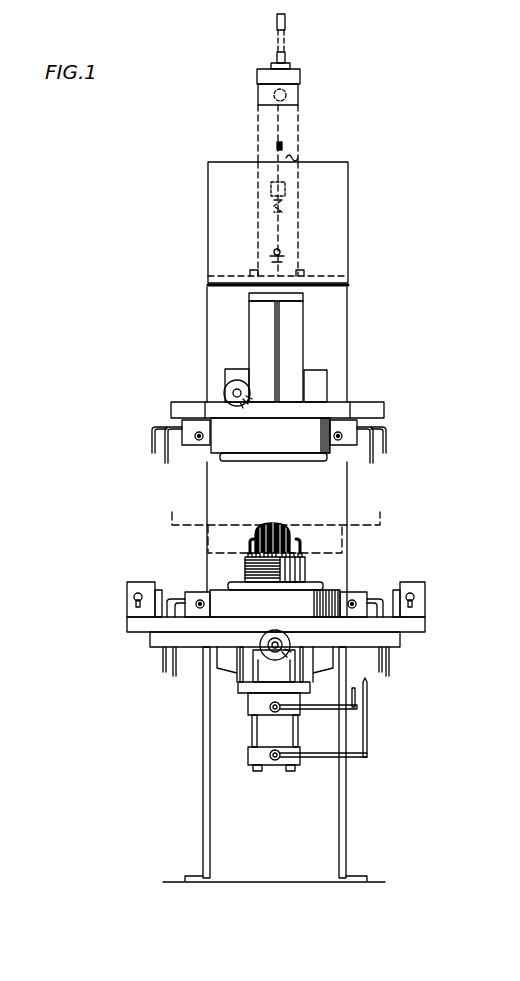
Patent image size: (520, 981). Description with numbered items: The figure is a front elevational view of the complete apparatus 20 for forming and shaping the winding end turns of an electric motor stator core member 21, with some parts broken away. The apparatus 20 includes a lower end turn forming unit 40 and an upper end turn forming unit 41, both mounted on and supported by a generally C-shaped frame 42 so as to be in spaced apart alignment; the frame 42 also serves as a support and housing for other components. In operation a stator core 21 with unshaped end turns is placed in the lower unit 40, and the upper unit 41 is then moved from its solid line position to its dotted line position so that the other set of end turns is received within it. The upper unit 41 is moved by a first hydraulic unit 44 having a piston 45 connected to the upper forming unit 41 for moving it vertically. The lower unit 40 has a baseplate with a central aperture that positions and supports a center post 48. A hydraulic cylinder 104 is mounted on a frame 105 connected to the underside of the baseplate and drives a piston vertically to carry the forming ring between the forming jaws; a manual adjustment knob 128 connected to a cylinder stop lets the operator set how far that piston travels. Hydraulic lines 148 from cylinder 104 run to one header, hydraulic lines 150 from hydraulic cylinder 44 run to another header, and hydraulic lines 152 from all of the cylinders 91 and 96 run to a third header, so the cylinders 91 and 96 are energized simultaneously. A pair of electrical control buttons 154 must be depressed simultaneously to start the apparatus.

The apparatus 20 is at (437, 256).
The stator core member 21 is at (310, 573).
The lower end turn forming unit 40 is at (200, 632).
The upper end turn forming unit 41 is at (318, 368).
The C-shaped frame 42 is at (348, 220).
The first hydraulic unit 44 is at (298, 156).
The piston 45 is at (287, 62).
The center post 48 is at (270, 522).
The cylinder 91 is at (193, 446).
The cylinder 96 is at (350, 446).
The hydraulic cylinder 104 is at (268, 731).
The frame 105 is at (247, 689).
The manual adjustment knob 128 is at (225, 391).
The hydraulic lines 148 is at (306, 752).
The hydraulic lines 150 is at (278, 113).
The hydraulic lines 152 is at (151, 434).
The electrical control buttons 154 is at (133, 596).